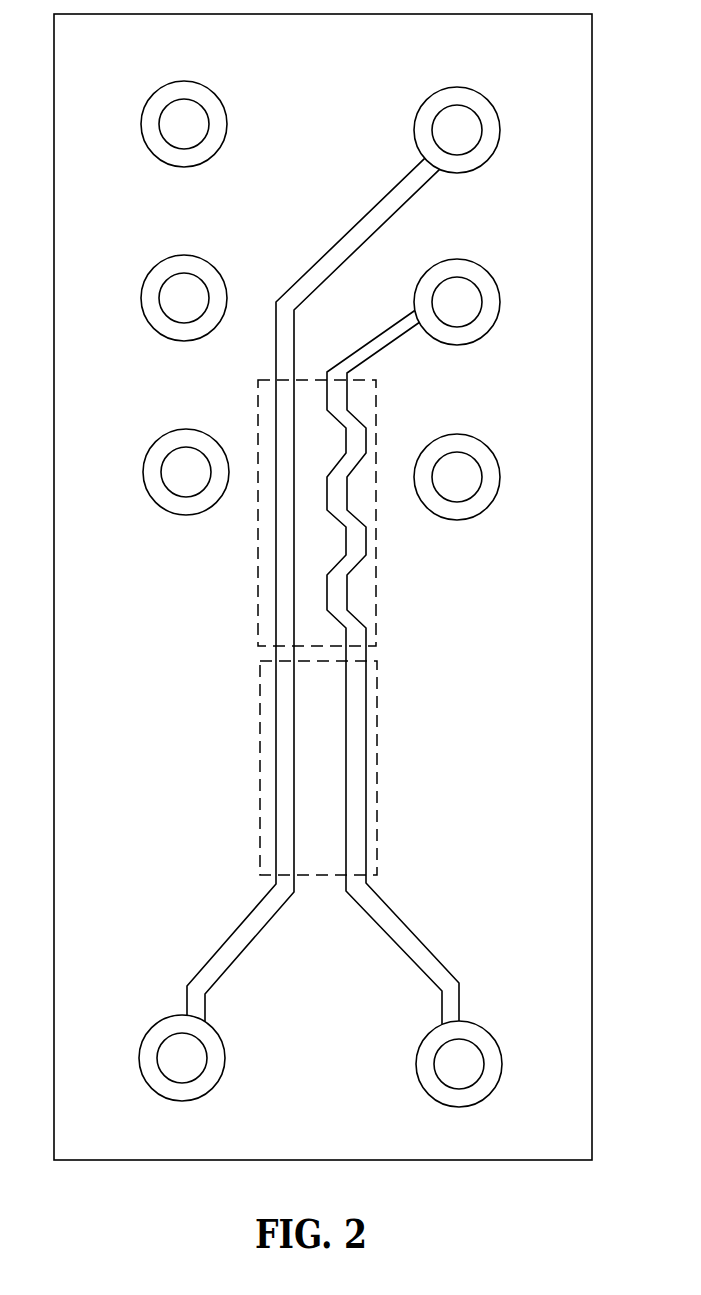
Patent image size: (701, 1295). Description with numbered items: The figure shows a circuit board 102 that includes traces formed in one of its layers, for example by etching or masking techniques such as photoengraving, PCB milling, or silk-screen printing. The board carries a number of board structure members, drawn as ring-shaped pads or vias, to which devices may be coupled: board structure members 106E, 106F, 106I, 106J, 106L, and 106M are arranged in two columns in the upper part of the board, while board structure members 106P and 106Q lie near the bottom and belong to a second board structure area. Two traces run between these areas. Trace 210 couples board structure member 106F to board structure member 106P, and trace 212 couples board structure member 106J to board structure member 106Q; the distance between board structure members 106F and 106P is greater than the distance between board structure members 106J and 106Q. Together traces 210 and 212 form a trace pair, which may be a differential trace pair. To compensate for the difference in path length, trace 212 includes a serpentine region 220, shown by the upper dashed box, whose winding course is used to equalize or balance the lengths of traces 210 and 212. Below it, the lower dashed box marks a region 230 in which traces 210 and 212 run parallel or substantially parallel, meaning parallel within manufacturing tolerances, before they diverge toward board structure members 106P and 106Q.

The circuit board 102 is at (212, 46).
The board structure member 106E is at (141, 124).
The board structure member 106F is at (501, 130).
The board structure member 106I is at (141, 298).
The board structure member 106J is at (501, 302).
The board structure member 106L is at (185, 429).
The board structure member 106M is at (455, 434).
The board structure member 106P is at (139, 1058).
The board structure member 106Q is at (502, 1064).
The trace 210 is at (233, 934).
The trace 212 is at (410, 930).
The serpentine region 220 is at (376, 595).
The region 230 is at (377, 832).